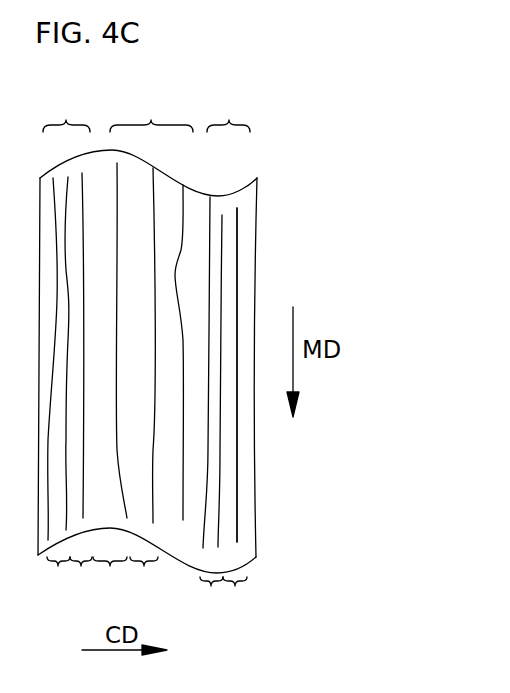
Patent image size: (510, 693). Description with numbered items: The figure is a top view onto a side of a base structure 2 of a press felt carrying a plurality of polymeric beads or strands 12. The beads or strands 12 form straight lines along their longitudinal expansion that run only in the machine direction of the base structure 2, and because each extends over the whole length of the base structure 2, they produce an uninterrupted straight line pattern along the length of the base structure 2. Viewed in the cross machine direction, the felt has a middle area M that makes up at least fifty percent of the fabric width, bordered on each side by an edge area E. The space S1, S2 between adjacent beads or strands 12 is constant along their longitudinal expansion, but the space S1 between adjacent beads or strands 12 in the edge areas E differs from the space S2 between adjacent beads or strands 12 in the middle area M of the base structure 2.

The base structure 2 is at (258, 228).
The polymeric beads 12 is at (237, 273).
The edge area E is at (146, 111).
The middle area M is at (151, 111).
The space between adjacent beads in the edge areas S1 is at (152, 588).
The space between adjacent beads in the middle area S2 is at (128, 580).